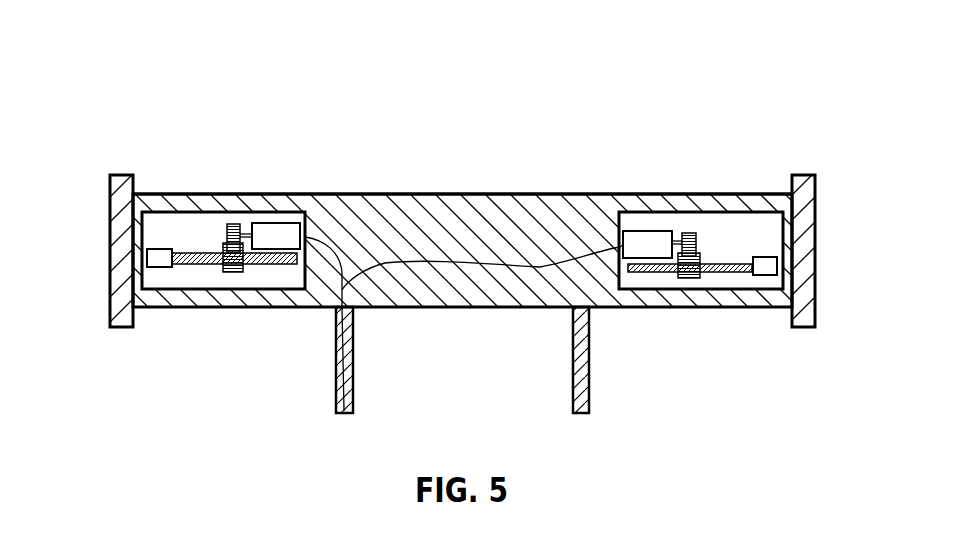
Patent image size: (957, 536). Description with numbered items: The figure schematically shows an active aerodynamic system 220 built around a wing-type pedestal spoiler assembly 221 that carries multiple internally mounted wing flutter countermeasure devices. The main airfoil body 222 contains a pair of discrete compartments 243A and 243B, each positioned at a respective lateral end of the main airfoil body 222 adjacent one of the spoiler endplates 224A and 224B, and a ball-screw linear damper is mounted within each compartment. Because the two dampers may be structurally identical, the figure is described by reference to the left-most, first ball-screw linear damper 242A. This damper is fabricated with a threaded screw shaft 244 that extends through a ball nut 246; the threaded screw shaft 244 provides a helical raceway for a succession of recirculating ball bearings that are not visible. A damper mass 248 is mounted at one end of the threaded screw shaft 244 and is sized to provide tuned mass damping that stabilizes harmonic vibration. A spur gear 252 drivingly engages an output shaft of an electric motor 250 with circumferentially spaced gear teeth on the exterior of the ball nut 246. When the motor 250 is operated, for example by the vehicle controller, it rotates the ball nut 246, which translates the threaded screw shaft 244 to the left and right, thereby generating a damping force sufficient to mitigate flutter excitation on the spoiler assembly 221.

The active aerodynamic system 220 is at (174, 52).
The wing-type pedestal spoiler assembly 221 is at (366, 188).
The main airfoil body 222 is at (459, 194).
The spoiler endplate 224A is at (119, 175).
The spoiler endplate 224B is at (802, 176).
The first ball-screw linear damper 242A is at (202, 206).
The compartment 243A is at (220, 248).
The compartment 243B is at (741, 277).
The threaded screw shaft 244 is at (282, 265).
The ball nut 246 is at (233, 304).
The damper mass 248 is at (153, 249).
The electric motor 250 is at (270, 223).
The spur gear 252 is at (230, 224).